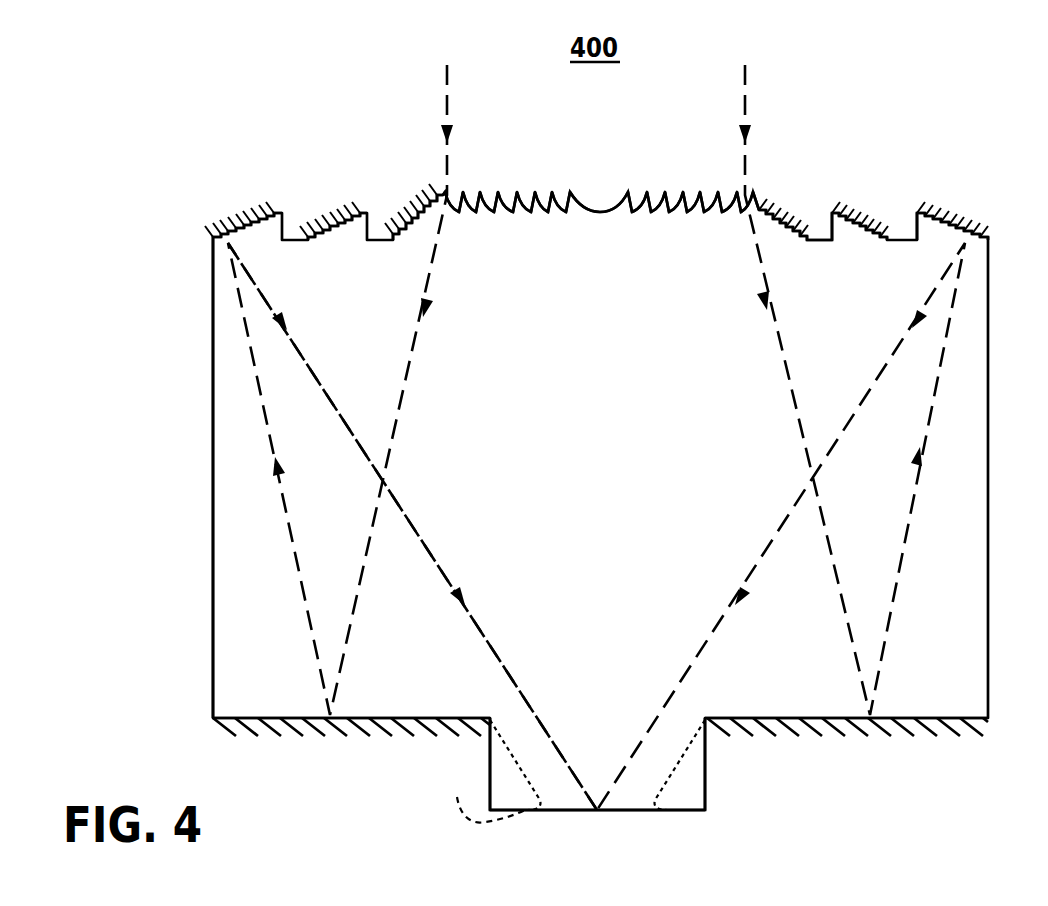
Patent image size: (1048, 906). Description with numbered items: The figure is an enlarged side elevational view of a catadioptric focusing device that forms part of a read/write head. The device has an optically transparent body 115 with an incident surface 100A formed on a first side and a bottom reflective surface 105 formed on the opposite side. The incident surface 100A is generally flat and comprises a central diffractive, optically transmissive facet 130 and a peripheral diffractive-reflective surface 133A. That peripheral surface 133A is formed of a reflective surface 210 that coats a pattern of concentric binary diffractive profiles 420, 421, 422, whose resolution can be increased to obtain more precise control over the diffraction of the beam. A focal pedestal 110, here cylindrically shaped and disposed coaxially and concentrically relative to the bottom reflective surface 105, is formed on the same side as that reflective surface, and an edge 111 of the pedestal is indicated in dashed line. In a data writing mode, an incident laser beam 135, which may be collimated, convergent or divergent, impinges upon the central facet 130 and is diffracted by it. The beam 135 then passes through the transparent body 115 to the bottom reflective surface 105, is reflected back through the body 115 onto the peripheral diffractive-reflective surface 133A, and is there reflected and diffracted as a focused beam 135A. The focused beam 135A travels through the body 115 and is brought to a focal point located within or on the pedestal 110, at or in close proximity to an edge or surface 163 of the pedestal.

The incident surface 100A is at (165, 226).
The body 115 is at (230, 567).
The bottom reflective surface 105 is at (192, 733).
The focal pedestal 110 is at (468, 762).
The edge 111 is at (490, 777).
The edge or surface of the pedestal 163 is at (675, 810).
The central facet 130 is at (670, 186).
The binary diffractive profile 420 is at (257, 222).
The binary diffractive profile 421 is at (313, 226).
The binary diffractive profile 422 is at (396, 224).
The reflective surface 210 is at (877, 211).
The peripheral diffractive-reflective surface 133A is at (962, 184).
The laser beam 135 is at (447, 170).
The focused beam 135A is at (433, 550).